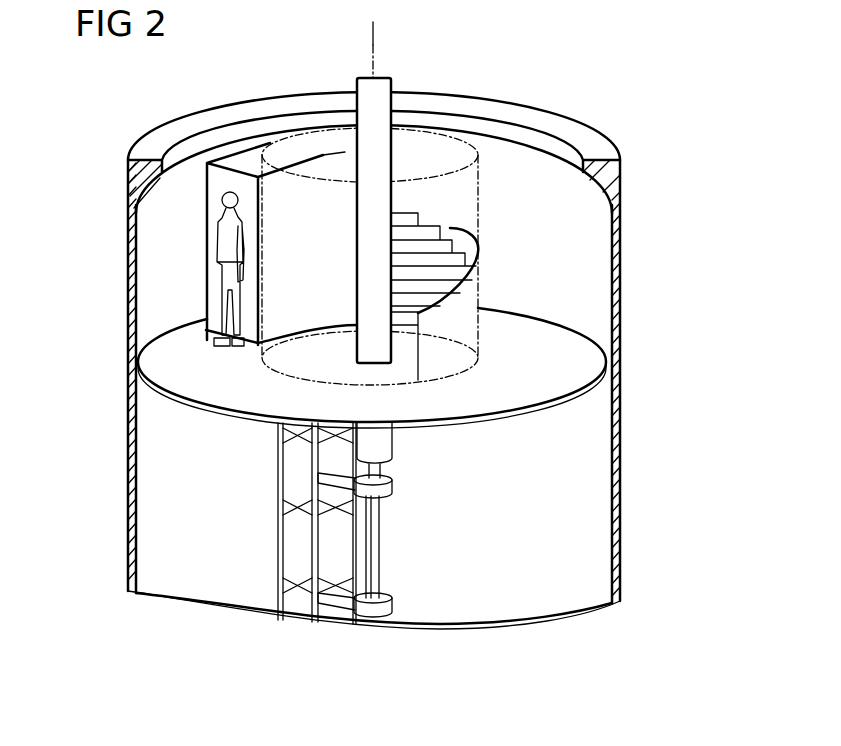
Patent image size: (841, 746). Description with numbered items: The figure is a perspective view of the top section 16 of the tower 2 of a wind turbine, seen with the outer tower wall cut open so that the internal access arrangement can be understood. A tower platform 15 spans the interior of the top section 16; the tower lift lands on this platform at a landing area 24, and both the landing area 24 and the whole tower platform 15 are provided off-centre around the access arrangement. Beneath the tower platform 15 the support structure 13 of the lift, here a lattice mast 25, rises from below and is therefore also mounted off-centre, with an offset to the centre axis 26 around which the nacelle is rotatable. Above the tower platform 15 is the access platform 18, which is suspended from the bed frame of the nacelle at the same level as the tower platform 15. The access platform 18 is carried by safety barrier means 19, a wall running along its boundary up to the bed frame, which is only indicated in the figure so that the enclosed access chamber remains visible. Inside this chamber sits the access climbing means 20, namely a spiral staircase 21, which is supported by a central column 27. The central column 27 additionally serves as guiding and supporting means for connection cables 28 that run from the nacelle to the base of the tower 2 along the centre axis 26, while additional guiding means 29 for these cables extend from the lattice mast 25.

The tower 2 is at (615, 543).
The support structure 13 is at (250, 496).
The tower platform 15 is at (588, 355).
The top section 16 is at (660, 295).
The access platform 18 is at (300, 355).
The safety barrier means 19 is at (320, 175).
The access climbing means 20 is at (468, 125).
The spiral staircase 21 is at (433, 283).
The landing area 24 is at (240, 165).
The lattice mast 25 is at (283, 554).
The centre axis 26 is at (373, 33).
The central column 27 is at (358, 288).
The connection cables 28 is at (375, 555).
The additional guiding means 29 is at (393, 492).